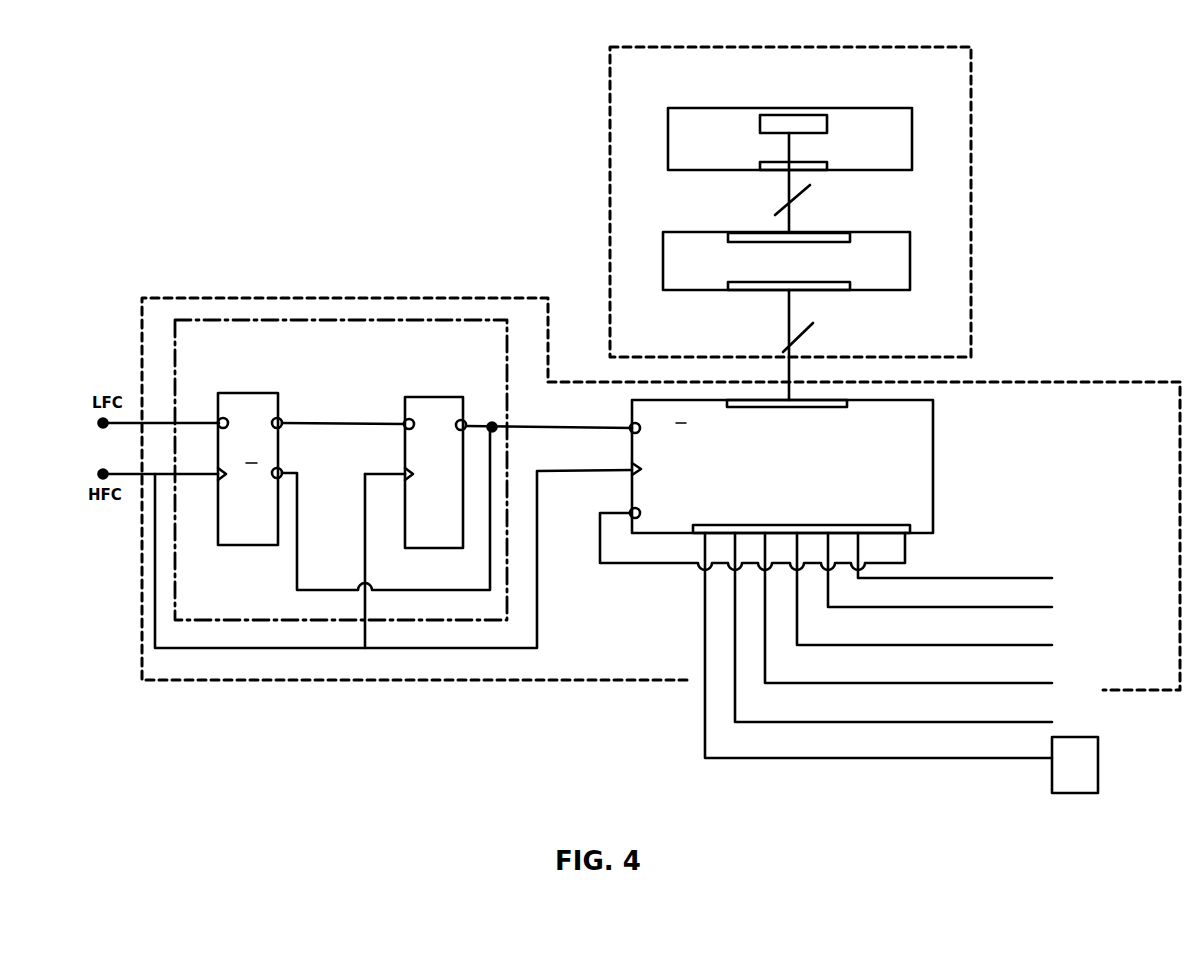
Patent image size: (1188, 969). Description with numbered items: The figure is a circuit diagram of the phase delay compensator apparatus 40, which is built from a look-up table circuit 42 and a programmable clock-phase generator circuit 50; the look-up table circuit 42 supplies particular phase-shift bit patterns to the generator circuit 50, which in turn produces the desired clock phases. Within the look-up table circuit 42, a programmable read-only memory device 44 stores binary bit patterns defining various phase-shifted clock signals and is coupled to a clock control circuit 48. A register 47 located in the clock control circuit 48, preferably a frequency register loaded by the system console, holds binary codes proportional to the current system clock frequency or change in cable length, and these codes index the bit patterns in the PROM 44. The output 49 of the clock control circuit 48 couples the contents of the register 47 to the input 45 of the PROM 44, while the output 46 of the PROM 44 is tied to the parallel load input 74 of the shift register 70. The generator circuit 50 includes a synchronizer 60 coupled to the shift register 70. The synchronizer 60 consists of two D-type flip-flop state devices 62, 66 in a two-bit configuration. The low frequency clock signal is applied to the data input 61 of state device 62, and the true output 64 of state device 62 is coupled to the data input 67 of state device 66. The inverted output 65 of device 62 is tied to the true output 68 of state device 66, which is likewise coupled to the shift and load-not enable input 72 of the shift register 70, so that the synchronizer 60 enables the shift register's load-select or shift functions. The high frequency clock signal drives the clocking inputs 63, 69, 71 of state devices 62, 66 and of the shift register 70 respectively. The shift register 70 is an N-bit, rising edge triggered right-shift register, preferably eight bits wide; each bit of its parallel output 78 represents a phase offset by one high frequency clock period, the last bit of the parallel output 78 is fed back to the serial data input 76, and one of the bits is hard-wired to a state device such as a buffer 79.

The phase delay compensator apparatus 40 is at (218, 104).
The look-up table circuit 42 is at (972, 192).
The programmable read-only memory (PROM) device 44 is at (910, 262).
The input of the PROM 45 is at (838, 232).
The output of the PROM 46 is at (735, 291).
The register 47 is at (768, 115).
The clock control circuit 48 is at (912, 140).
The output of the clock control circuit 49 is at (780, 172).
The programmable clock-phase generator circuit 50 is at (1130, 384).
The synchronizer 60 is at (398, 622).
The data input of state device 62 61 is at (218, 430).
The state device 62 is at (270, 391).
The clocking input of state device 62 63 is at (218, 482).
The Q1 output 64 is at (283, 419).
The Q1(not) output 65 is at (283, 469).
The state device 66 is at (442, 397).
The data input of state device 66 67 is at (404, 423).
The Q2 output 68 is at (472, 420).
The clocking input of state device 66 69 is at (404, 472).
The shift register 70 is at (934, 458).
The clocking input of shift register 70 71 is at (626, 468).
The shift and load(not) enable input 72 is at (629, 425).
The parallel load input 74 is at (842, 408).
The serial data input 76 is at (625, 511).
The parallel output 78 is at (849, 516).
The buffer 79 is at (1099, 752).